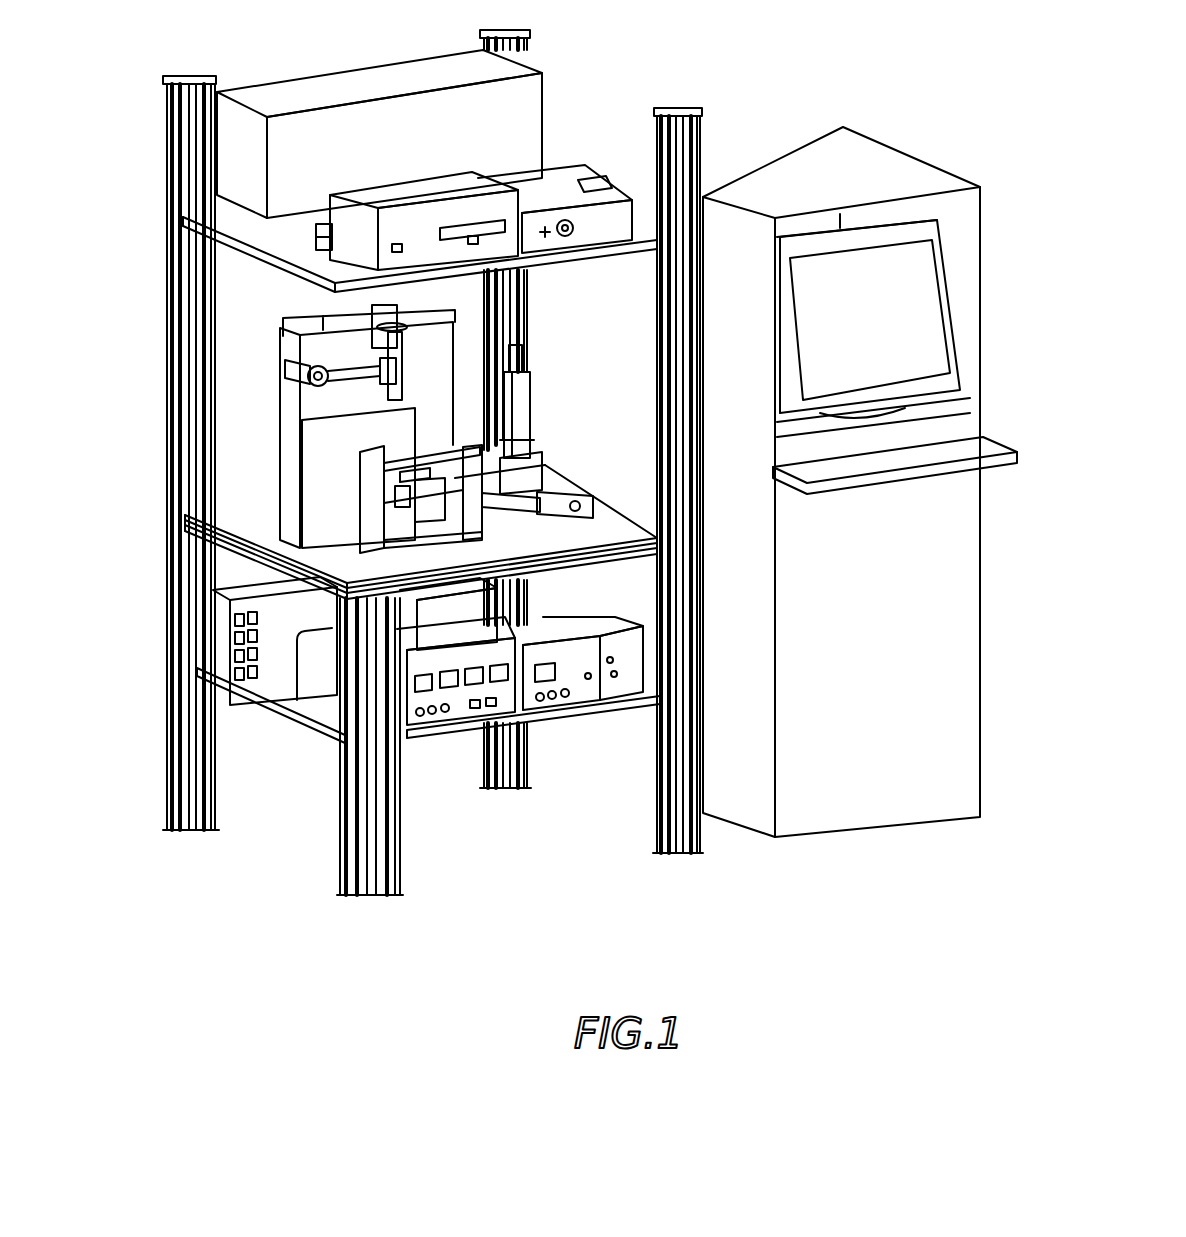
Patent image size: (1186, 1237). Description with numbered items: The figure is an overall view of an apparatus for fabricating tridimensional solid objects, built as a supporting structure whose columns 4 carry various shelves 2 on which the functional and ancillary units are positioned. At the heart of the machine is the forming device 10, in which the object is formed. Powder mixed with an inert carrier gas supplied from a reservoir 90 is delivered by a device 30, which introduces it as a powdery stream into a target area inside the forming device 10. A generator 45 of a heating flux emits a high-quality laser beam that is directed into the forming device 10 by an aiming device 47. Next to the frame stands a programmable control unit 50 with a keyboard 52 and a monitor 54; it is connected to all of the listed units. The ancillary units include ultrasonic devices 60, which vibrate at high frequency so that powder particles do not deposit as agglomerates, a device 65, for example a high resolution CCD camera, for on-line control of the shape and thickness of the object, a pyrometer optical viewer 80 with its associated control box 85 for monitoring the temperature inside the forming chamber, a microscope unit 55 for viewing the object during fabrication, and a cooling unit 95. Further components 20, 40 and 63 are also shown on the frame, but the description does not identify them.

The shelves 2 is at (643, 233).
The columns 4 is at (695, 112).
The forming device 10 is at (495, 492).
The actuator post 20 is at (520, 440).
The powder introduction device 30 is at (290, 440).
The controller unit 40 is at (517, 175).
The heating flux generator 45 is at (318, 224).
The aiming device 47 is at (332, 473).
The programmable control unit 50 is at (872, 803).
The keyboard 52 is at (925, 453).
The monitor 54 is at (867, 278).
The microscope unit 55 is at (510, 490).
The ultrasonic devices 60 is at (632, 682).
The power supply instrument 63 is at (578, 693).
The CCD camera device 65 is at (420, 205).
The pyrometer optical viewer 80 is at (372, 367).
The control box 85 is at (595, 192).
The reservoir 90 is at (273, 673).
The cooling unit 95 is at (330, 92).